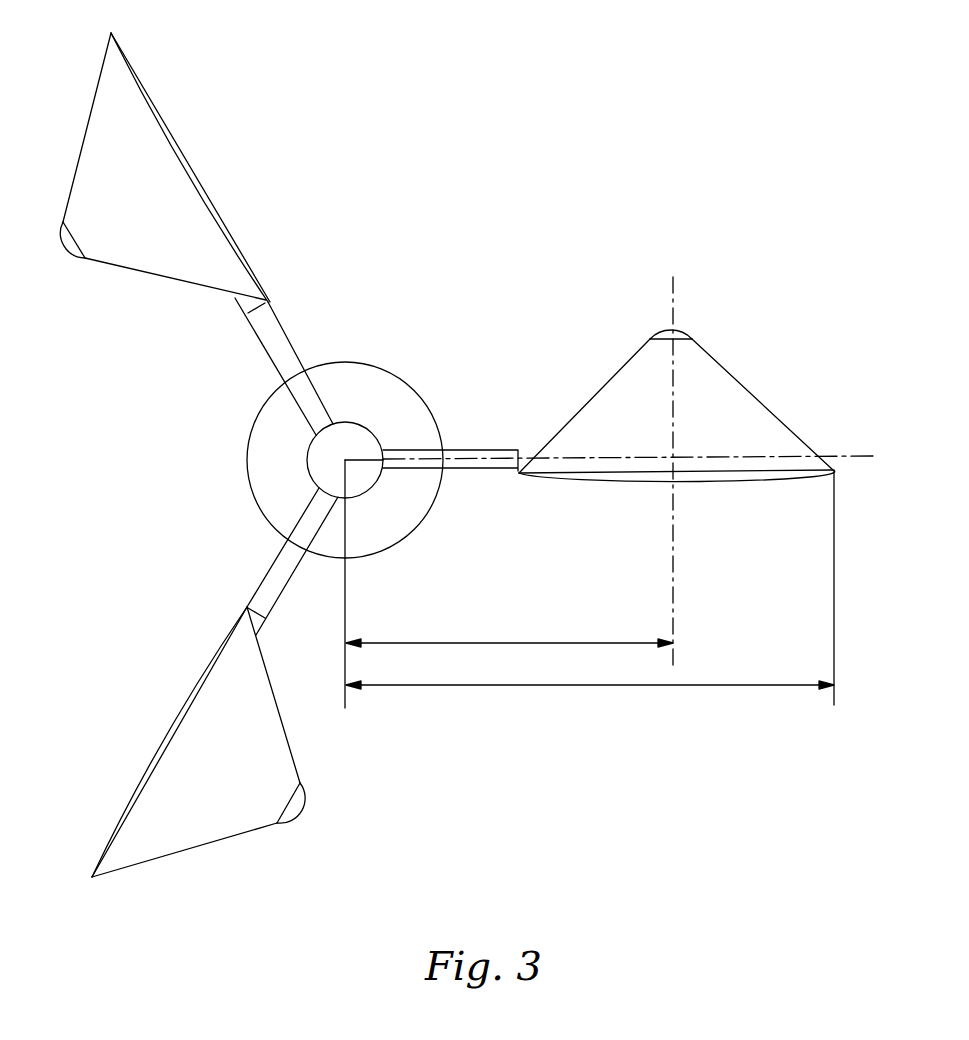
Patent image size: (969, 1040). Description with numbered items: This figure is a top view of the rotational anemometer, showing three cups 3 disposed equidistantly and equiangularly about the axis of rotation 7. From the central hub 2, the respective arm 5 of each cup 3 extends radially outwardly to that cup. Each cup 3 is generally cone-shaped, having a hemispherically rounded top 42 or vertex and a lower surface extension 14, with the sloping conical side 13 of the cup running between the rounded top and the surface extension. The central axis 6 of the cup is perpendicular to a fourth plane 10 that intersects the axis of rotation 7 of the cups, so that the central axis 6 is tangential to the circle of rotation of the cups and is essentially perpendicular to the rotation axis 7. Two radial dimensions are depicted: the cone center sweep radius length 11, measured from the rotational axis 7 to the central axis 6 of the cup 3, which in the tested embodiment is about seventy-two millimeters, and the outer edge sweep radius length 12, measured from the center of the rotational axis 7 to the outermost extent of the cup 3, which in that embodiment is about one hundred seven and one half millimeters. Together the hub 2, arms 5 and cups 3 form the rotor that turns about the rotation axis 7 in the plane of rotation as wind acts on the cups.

The hub 2 is at (307, 467).
The cup 3 is at (447, 455).
The arm 5 is at (472, 469).
The central axis 6 is at (673, 407).
The rotation axis 7 is at (345, 460).
The fourth plane 10 is at (853, 454).
The cone center sweep radius length 11 is at (472, 642).
The outer edge sweep radius length 12 is at (547, 687).
The conical blade surface 13 is at (757, 393).
The surface extension 14 is at (742, 482).
The hemispherically rounded top 42 is at (680, 332).